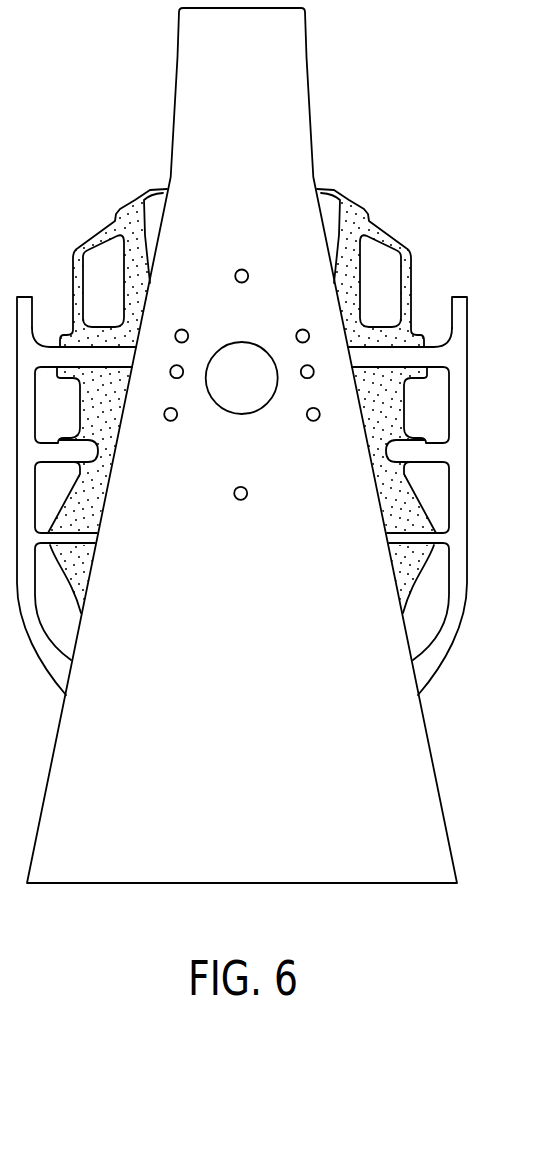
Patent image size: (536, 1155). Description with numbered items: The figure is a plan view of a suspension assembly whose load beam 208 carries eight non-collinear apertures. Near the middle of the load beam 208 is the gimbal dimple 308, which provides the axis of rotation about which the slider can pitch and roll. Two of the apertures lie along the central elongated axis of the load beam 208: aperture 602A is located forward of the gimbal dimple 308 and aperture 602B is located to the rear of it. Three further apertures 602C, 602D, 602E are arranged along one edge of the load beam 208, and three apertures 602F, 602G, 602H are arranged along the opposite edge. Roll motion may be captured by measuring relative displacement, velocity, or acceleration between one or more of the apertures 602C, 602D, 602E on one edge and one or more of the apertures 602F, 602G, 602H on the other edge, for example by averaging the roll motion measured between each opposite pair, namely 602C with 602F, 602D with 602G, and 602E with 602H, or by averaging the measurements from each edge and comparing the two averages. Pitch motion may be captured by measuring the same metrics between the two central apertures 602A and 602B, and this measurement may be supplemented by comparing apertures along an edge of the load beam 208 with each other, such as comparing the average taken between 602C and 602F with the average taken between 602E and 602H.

The load beam 208 is at (312, 112).
The gimbal dimple 308 is at (227, 413).
The aperture 602A is at (245, 268).
The aperture 602B is at (242, 500).
The aperture 602C is at (182, 329).
The aperture 602D is at (172, 377).
The aperture 602E is at (175, 420).
The aperture 602F is at (302, 329).
The aperture 602G is at (312, 377).
The aperture 602H is at (309, 420).